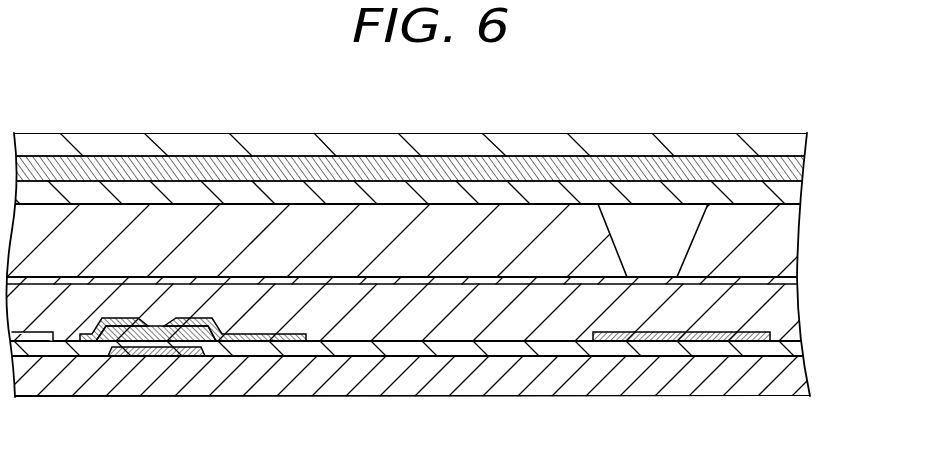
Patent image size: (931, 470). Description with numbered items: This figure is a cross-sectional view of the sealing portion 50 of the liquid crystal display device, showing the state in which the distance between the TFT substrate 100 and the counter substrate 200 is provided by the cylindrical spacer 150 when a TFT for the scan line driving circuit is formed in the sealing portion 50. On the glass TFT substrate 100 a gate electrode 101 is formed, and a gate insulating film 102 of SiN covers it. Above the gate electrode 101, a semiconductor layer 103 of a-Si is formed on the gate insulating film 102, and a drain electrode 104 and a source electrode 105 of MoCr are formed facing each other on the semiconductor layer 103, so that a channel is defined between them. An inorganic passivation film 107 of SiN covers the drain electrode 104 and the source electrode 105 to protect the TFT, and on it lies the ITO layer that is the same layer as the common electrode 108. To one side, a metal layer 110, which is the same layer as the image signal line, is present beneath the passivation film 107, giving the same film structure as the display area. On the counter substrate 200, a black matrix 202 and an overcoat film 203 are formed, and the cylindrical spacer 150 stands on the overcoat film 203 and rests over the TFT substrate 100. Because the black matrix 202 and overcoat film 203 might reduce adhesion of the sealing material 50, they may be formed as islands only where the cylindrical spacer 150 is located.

The sealing portion 50 is at (383, 228).
The TFT substrate 100 is at (795, 376).
The gate electrode 101 is at (157, 356).
The gate insulating film 102 is at (794, 348).
The semiconductor layer 103 is at (157, 326).
The drain electrode 104 is at (102, 318).
The source electrode 105 is at (229, 324).
The inorganic passivation film 107 is at (790, 299).
The common electrode 108 is at (783, 279).
The metal layer 110 is at (768, 331).
The cylindrical spacer 150 is at (672, 228).
The counter substrate 200 is at (797, 144).
The black matrix 202 is at (532, 162).
The overcoat film 203 is at (797, 192).